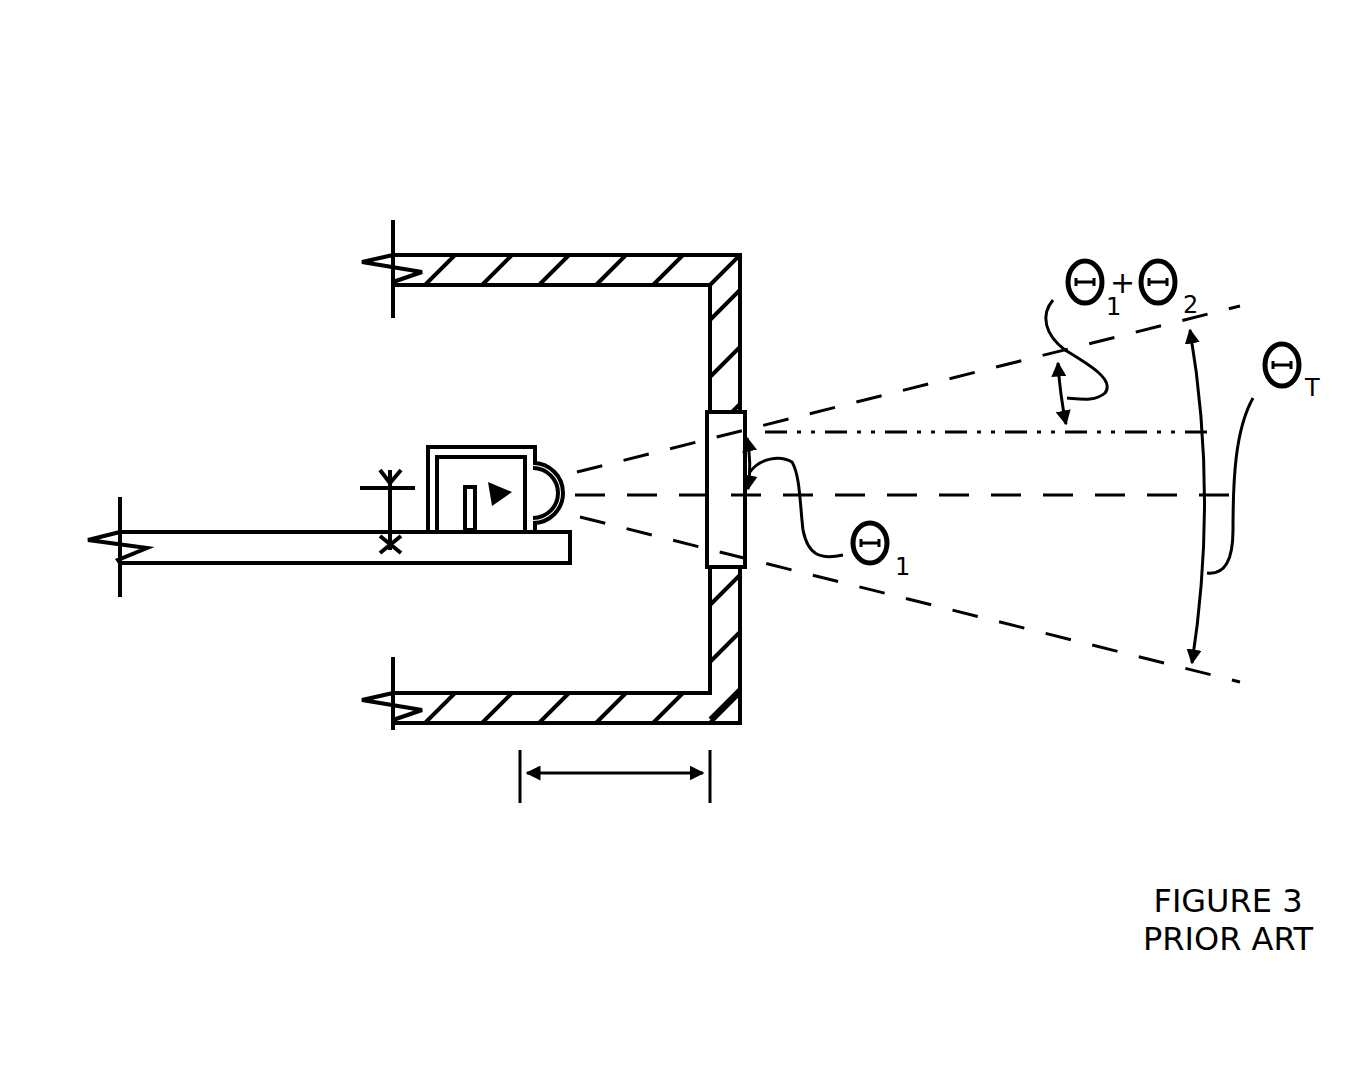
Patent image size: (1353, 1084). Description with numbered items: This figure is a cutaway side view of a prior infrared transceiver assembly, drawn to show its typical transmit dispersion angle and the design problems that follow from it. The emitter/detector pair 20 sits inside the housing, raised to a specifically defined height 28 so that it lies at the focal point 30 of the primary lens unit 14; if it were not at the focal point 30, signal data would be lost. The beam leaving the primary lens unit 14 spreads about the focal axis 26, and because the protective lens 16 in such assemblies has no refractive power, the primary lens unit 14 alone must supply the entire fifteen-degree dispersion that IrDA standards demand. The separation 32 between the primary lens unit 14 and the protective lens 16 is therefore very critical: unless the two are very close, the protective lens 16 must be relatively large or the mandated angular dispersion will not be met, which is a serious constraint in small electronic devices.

The primary lens unit 14 is at (550, 476).
The protective lens 16 is at (747, 537).
The emitter/detector pair 20 is at (484, 487).
The focal axis 26 is at (1095, 495).
The height 28 is at (390, 510).
The focal point 30 is at (482, 507).
The separation 32 is at (610, 773).